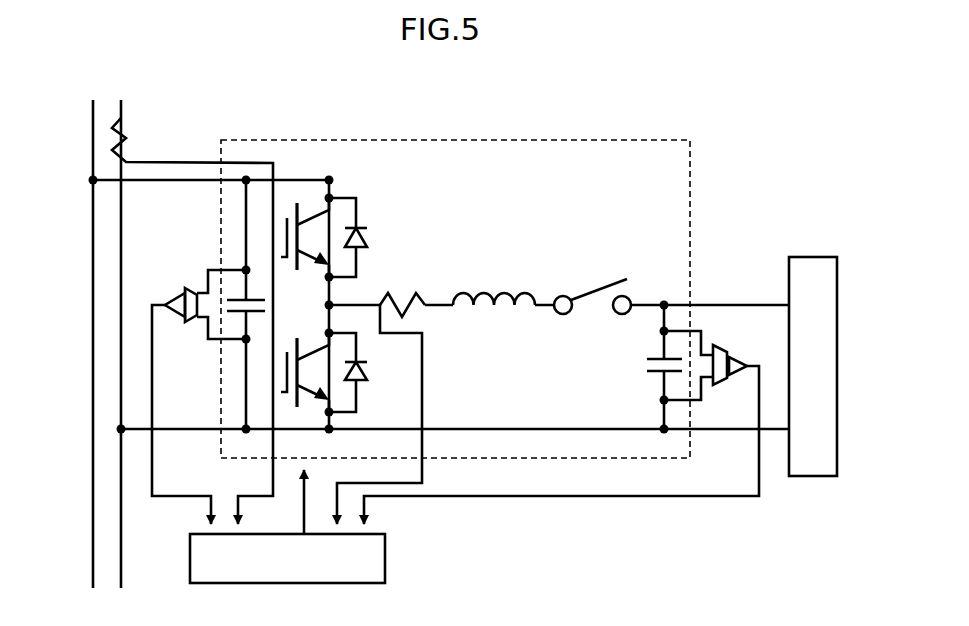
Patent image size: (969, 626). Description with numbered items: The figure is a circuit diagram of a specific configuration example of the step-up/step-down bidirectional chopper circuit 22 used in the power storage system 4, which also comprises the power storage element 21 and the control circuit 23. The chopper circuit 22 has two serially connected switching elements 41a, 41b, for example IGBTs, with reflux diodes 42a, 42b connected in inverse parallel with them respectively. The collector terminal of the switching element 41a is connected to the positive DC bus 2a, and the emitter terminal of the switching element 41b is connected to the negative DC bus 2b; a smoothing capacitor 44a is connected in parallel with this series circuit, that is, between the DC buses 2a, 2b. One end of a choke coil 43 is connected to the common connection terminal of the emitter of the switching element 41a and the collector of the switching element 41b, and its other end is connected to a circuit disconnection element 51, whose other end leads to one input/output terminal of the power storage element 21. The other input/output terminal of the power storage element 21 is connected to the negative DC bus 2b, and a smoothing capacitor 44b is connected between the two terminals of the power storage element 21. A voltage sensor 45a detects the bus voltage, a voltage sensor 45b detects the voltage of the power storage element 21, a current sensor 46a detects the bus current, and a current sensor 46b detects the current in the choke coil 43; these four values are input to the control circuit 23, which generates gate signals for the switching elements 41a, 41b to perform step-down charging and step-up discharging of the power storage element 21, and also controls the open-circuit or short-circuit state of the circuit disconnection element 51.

The positive DC bus 2a is at (92, 213).
The negative DC bus 2b is at (124, 113).
The power storage system 4 is at (480, 265).
The power storage element 21 is at (810, 257).
The step-up/step-down bidirectional chopper circuit 22 is at (692, 178).
The control circuit 23 is at (388, 557).
The switching element 41a is at (283, 232).
The switching element 41b is at (285, 373).
The reflux diode 42a is at (370, 238).
The reflux diode 42b is at (367, 384).
The choke coil 43 is at (503, 292).
The smoothing capacitor 44a is at (235, 297).
The smoothing capacitor 44b is at (644, 366).
The voltage sensor 45a is at (175, 299).
The voltage sensor 45b is at (742, 355).
The current sensor 46a is at (124, 140).
The current sensor 46b is at (394, 302).
The circuit disconnection element 51 is at (583, 291).